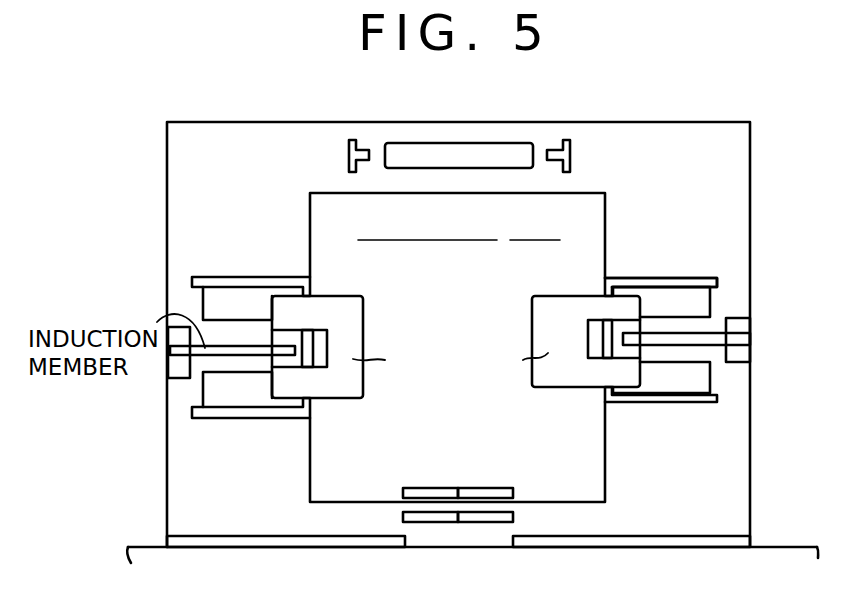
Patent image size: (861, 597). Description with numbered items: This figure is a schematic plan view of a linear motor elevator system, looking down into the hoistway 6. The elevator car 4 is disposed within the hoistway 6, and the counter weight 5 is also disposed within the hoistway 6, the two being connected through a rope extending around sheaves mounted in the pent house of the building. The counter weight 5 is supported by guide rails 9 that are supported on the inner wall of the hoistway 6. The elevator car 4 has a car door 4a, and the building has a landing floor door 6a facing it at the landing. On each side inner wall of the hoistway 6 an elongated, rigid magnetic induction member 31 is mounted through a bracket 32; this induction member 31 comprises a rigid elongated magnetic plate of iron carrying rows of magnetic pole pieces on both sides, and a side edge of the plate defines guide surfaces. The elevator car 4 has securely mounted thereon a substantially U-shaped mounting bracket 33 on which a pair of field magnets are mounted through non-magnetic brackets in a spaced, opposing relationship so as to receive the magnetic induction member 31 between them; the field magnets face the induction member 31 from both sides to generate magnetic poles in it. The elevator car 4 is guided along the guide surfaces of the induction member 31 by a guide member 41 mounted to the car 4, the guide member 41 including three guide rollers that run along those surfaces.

The elevator car 4 is at (310, 193).
The car door 4a is at (450, 488).
The counter weight 5 is at (498, 143).
The hoistway 6 is at (201, 122).
The landing floor door 6a is at (475, 523).
The guide rails 9 is at (567, 138).
The magnetic induction member 31 is at (725, 202).
The bracket 32 is at (745, 325).
The mounting bracket 33 is at (683, 278).
The guide member 41 is at (580, 388).